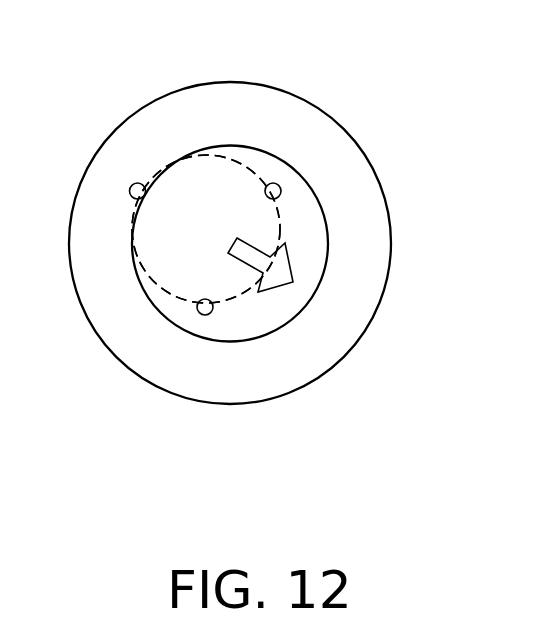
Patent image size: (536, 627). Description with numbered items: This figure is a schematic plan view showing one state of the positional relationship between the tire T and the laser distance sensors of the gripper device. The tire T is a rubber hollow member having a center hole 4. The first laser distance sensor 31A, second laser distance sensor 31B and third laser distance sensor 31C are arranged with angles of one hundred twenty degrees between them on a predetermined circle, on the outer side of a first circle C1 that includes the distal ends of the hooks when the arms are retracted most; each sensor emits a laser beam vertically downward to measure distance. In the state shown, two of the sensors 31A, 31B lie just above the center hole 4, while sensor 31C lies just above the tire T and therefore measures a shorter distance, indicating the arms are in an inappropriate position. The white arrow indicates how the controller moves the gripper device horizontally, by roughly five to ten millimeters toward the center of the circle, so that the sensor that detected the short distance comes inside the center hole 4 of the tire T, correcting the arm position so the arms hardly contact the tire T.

The center hole 4 is at (258, 170).
The tire T is at (325, 152).
The first laser distance sensor 31A is at (281, 189).
The second laser distance sensor 31B is at (133, 185).
The third laser distance sensor 31C is at (202, 315).
The first circle C1 is at (277, 230).